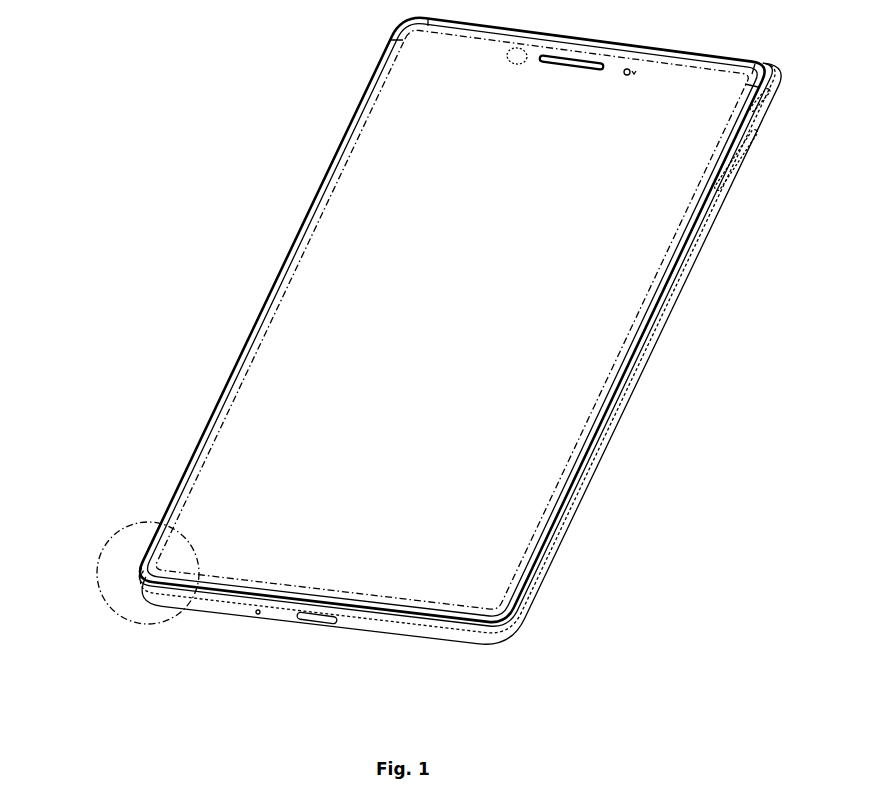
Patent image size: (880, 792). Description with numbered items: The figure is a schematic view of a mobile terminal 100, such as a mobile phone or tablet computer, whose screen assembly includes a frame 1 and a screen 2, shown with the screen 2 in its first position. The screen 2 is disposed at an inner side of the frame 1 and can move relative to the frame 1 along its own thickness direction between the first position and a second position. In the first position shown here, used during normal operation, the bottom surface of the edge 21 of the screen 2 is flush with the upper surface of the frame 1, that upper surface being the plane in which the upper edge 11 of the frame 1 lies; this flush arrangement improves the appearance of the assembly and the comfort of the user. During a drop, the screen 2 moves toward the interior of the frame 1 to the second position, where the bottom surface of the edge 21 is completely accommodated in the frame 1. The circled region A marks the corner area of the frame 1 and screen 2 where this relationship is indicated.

The mobile terminal 100 is at (302, 54).
The frame 1 is at (274, 612).
The upper edge 11 is at (228, 596).
The screen 2 is at (396, 588).
The edge 21 is at (450, 624).
The detail region A is at (124, 624).